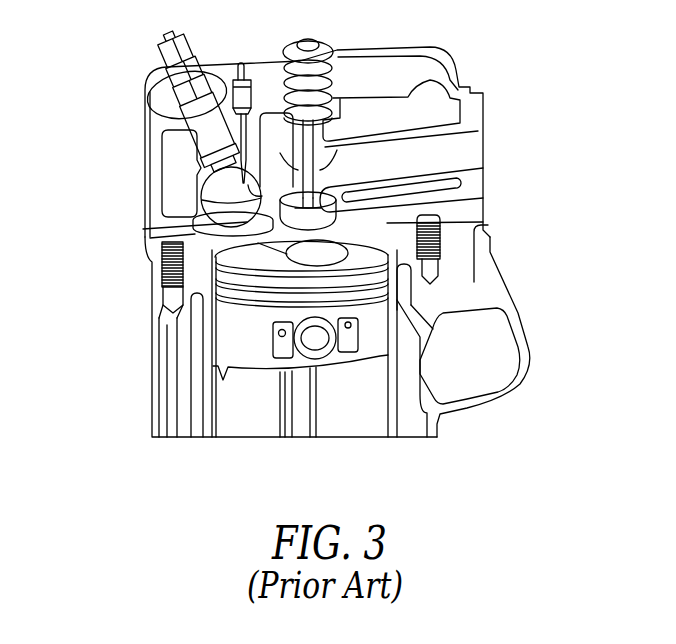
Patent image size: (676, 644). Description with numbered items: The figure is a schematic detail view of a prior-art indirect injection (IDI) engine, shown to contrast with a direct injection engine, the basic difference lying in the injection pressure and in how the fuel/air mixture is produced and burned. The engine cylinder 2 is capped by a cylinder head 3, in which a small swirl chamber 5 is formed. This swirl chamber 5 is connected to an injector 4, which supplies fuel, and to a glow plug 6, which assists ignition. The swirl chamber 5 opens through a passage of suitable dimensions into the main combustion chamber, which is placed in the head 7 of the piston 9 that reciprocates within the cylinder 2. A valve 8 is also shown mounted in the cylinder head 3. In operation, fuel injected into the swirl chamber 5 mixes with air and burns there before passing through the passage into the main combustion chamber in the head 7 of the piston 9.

The engine cylinder 2 is at (417, 443).
The cylinder head 3 is at (103, 71).
The injector 4 is at (215, 133).
The swirl chamber 5 is at (217, 183).
The glow plug 6 is at (258, 68).
The head of the piston 7 is at (283, 248).
The valve 8 is at (340, 250).
The piston 9 is at (253, 337).